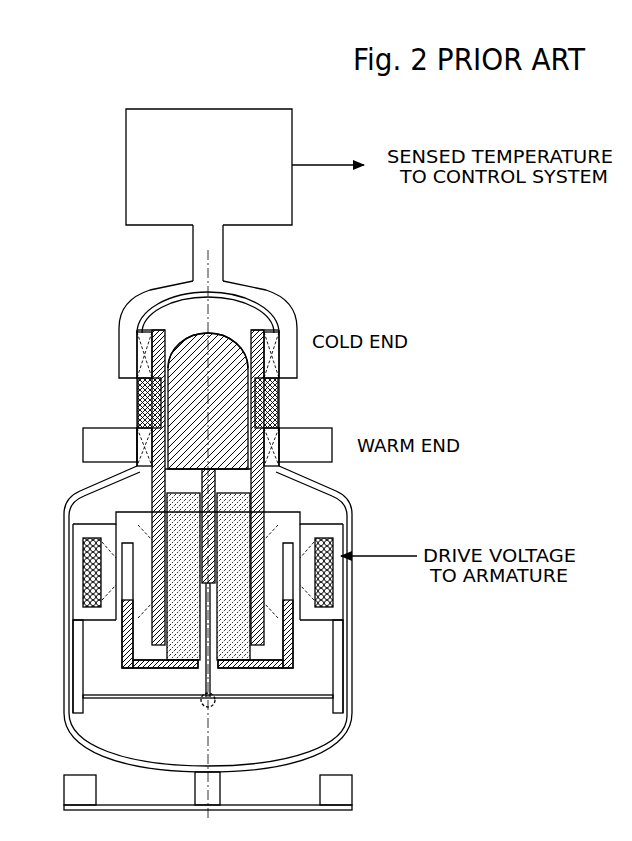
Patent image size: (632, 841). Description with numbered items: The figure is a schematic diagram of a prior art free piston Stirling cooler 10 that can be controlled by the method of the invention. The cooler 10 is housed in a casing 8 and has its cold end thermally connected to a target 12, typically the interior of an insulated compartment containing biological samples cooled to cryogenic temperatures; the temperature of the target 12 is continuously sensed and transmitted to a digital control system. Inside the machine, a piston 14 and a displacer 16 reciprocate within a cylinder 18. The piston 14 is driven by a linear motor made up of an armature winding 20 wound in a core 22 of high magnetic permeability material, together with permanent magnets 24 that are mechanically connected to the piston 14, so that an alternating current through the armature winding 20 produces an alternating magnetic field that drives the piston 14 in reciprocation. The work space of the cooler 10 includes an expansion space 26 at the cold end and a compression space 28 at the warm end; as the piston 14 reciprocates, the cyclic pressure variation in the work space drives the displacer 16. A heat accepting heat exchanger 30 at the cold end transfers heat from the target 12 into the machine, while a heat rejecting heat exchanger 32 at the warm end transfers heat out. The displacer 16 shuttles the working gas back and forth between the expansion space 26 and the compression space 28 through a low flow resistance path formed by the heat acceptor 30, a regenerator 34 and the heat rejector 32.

The casing 8 is at (337, 492).
The free piston Stirling cooler 10 is at (100, 329).
The target 12 is at (140, 132).
The piston 14 is at (233, 550).
The displacer 16 is at (222, 414).
The cylinder 18 is at (248, 331).
The armature winding 20 is at (327, 597).
The core 22 is at (308, 612).
The permanent magnets 24 is at (288, 572).
The expansion space 26 is at (181, 322).
The compression space 28 is at (232, 480).
The heat accepting heat exchanger 30 is at (270, 345).
The heat rejecting heat exchanger 32 is at (268, 433).
The regenerator 34 is at (145, 413).